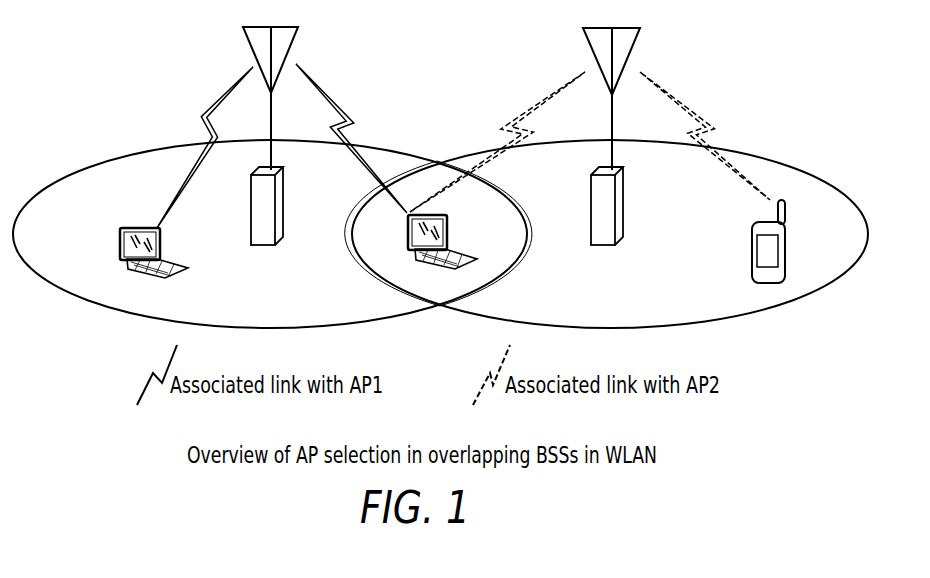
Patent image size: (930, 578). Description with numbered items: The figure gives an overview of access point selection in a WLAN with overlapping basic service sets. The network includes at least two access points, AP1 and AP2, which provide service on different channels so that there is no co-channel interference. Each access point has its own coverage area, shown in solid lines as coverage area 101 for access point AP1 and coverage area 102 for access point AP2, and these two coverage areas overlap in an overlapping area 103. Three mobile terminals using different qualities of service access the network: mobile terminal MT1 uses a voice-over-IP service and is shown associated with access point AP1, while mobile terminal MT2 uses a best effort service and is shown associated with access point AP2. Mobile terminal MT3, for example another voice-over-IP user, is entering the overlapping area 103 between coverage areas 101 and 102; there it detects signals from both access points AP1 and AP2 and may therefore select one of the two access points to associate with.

The coverage area 101 is at (88, 164).
The coverage area 102 is at (792, 168).
The overlapping area 103 is at (432, 181).
The access point AP1 is at (270, 153).
The access point AP2 is at (611, 155).
The mobile terminal MT1 is at (118, 242).
The mobile terminal MT2 is at (751, 262).
The mobile terminal MT3 is at (449, 231).